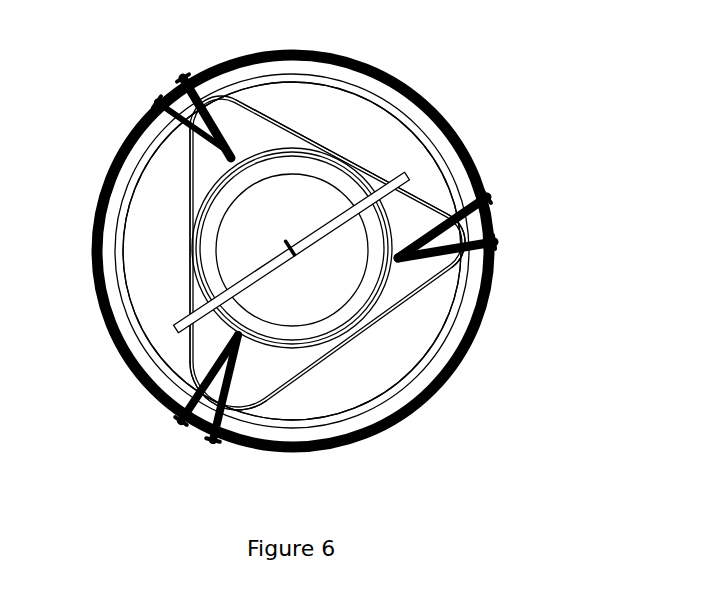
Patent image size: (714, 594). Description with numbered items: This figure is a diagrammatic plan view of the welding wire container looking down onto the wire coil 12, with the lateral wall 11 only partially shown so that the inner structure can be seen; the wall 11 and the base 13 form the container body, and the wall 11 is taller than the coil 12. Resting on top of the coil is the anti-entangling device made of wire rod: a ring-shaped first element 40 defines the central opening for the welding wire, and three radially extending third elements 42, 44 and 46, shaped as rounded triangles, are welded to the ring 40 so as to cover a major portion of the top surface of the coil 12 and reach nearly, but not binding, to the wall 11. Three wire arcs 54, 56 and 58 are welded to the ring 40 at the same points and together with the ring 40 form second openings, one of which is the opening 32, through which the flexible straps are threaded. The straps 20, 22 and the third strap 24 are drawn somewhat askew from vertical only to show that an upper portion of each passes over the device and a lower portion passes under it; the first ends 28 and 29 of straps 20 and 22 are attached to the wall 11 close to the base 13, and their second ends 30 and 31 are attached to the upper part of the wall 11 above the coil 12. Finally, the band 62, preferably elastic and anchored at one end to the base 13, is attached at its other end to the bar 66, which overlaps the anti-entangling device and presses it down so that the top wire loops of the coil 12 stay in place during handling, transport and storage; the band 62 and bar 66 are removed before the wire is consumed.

The lateral wall 11 is at (473, 165).
The wire coil 12 is at (424, 321).
The base 13 is at (428, 375).
The flexible strap 20 is at (489, 292).
The flexible strap 22 is at (250, 378).
The third strap 24 is at (178, 92).
The first end of strap 28 is at (490, 198).
The first end of strap 29 is at (213, 443).
The second end of strap 30 is at (497, 243).
The second end of strap 31 is at (177, 424).
The second opening 32 is at (388, 234).
The ring-shaped first element 40 is at (288, 147).
The radially extending third element 42 is at (407, 192).
The radially extending third element 44 is at (192, 363).
The radially extending third element 46 is at (237, 90).
The wire arc 54 is at (445, 193).
The wire arc 56 is at (236, 335).
The wire arc 58 is at (200, 185).
The band 62 is at (290, 246).
The bar 66 is at (355, 178).